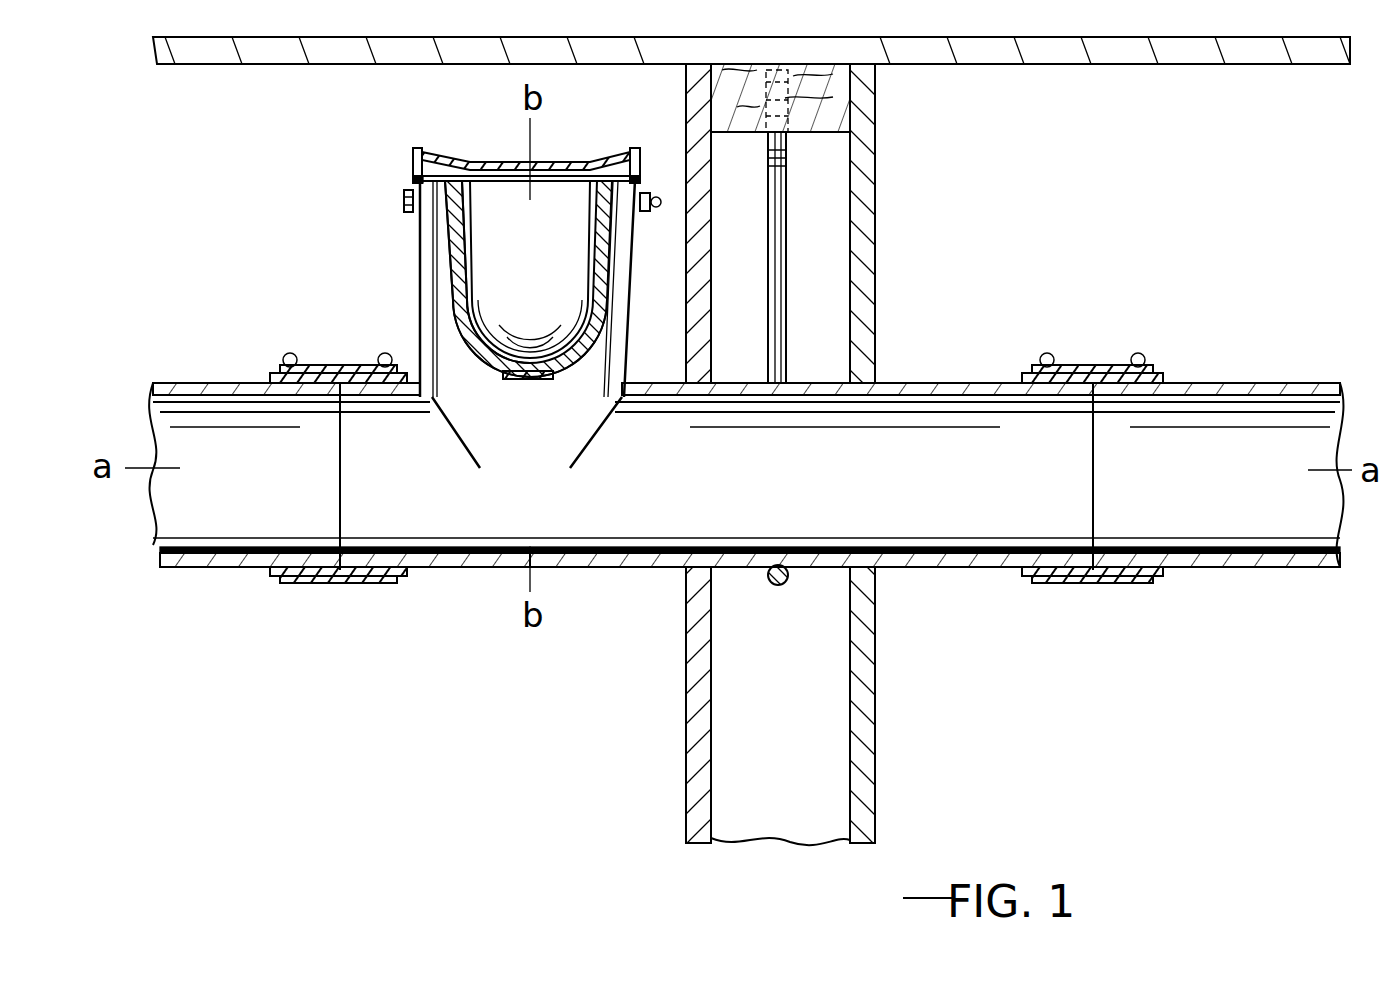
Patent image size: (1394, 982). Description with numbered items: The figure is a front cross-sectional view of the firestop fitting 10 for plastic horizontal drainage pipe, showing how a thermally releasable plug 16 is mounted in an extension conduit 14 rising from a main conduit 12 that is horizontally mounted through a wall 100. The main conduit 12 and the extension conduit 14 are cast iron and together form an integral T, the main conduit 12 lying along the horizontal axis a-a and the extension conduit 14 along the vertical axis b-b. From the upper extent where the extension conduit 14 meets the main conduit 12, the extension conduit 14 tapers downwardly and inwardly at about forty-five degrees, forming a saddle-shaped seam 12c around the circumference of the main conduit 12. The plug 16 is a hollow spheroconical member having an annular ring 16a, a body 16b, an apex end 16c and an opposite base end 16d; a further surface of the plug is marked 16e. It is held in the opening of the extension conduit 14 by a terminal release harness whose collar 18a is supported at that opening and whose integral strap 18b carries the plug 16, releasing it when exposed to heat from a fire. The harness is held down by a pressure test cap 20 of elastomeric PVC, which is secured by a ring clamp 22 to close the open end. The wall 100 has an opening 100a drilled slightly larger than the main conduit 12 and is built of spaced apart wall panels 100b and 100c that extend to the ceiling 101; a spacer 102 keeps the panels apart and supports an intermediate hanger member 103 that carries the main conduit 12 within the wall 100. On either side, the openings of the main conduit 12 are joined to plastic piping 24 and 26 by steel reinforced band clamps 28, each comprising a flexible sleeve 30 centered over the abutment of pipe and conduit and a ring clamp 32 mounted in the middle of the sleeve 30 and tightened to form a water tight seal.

The firestop fitting 10 is at (470, 252).
The main conduit 12 is at (746, 517).
The seam 12c is at (586, 447).
The extension conduit 14 is at (420, 296).
The releasable plug 16 is at (615, 303).
The annular ring 16a is at (420, 178).
The body 16b is at (440, 262).
The apex end 16c is at (583, 352).
The base end 16d is at (490, 190).
The liner inner surface 16e is at (458, 325).
The collar 18a is at (510, 187).
The strap 18b is at (545, 375).
The pressure test cap 20 is at (556, 160).
The ring clamp 22 is at (405, 200).
The plastic piping 24 is at (222, 568).
The plastic piping 26 is at (1278, 573).
The band clamp 28 is at (357, 583).
The sleeve 30 is at (360, 382).
The ring clamp 32 is at (327, 368).
The wall 100 is at (788, 454).
The opening 100a is at (877, 383).
The wall panel 100b is at (700, 792).
The wall panel 100c is at (868, 715).
The ceiling 101 is at (1113, 64).
The spacer 102 is at (842, 102).
The hanger member 103 is at (788, 242).